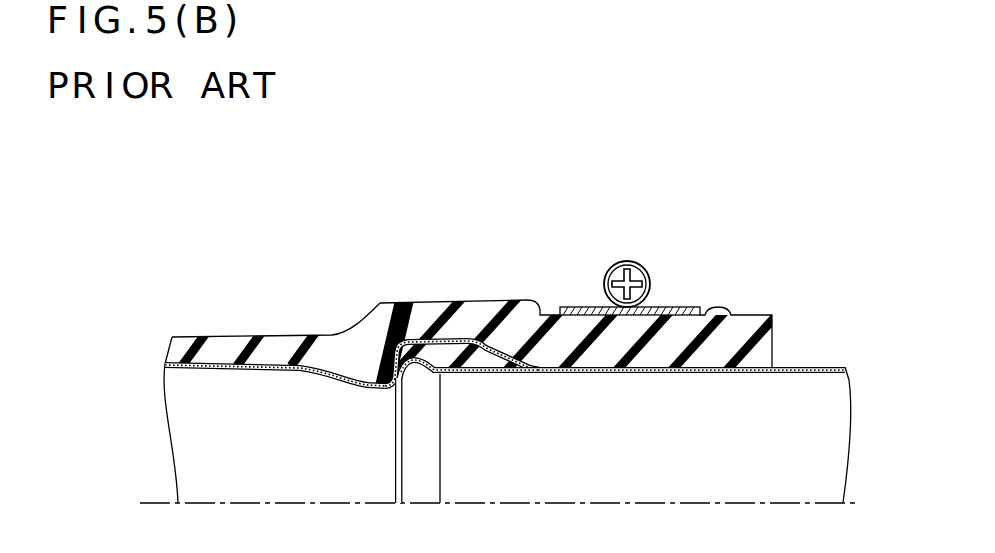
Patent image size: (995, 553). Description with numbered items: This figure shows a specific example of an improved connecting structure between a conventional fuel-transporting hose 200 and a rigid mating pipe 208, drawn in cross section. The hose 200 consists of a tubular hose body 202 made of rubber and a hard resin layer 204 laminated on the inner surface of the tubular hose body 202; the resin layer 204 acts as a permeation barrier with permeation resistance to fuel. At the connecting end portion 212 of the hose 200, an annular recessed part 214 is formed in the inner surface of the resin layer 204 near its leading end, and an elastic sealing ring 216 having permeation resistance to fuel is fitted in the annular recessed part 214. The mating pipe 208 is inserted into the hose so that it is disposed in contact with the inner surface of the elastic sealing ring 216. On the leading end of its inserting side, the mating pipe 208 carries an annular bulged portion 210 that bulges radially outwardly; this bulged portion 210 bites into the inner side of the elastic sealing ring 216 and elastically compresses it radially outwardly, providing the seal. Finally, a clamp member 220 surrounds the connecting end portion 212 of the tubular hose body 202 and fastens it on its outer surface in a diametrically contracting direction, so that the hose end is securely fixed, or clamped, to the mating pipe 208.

The hose 200 is at (327, 248).
The tubular hose body 202 is at (226, 330).
The resin layer 204 is at (247, 368).
The mating pipe 208 is at (811, 355).
The annular bulged portion 210 is at (410, 336).
The connecting end portion 212 is at (701, 358).
The annular recessed part 214 is at (470, 336).
The elastic sealing ring 216 is at (479, 365).
The clamp member 220 is at (669, 265).